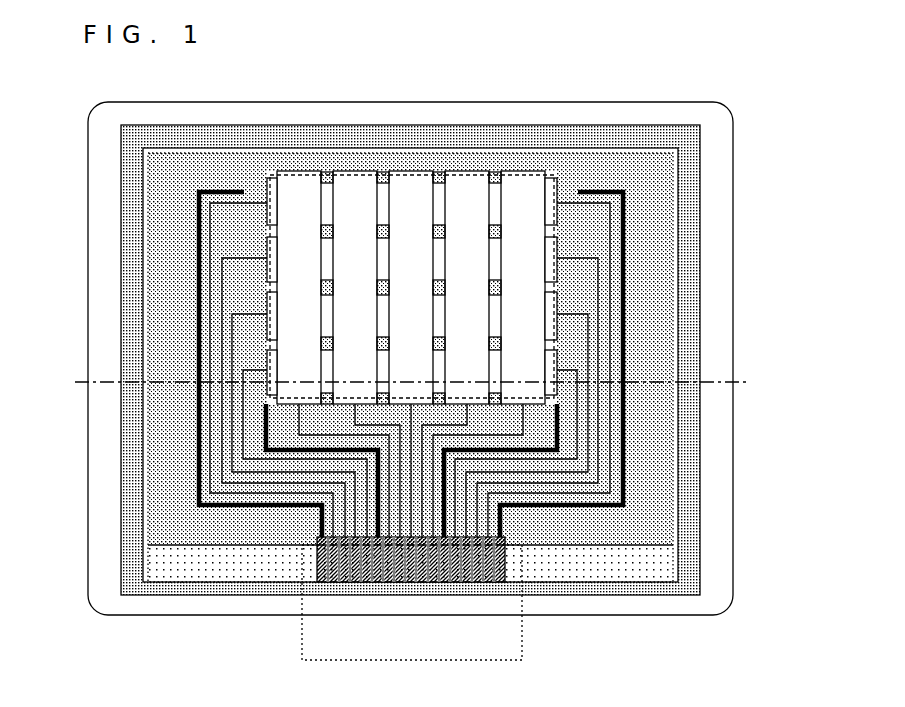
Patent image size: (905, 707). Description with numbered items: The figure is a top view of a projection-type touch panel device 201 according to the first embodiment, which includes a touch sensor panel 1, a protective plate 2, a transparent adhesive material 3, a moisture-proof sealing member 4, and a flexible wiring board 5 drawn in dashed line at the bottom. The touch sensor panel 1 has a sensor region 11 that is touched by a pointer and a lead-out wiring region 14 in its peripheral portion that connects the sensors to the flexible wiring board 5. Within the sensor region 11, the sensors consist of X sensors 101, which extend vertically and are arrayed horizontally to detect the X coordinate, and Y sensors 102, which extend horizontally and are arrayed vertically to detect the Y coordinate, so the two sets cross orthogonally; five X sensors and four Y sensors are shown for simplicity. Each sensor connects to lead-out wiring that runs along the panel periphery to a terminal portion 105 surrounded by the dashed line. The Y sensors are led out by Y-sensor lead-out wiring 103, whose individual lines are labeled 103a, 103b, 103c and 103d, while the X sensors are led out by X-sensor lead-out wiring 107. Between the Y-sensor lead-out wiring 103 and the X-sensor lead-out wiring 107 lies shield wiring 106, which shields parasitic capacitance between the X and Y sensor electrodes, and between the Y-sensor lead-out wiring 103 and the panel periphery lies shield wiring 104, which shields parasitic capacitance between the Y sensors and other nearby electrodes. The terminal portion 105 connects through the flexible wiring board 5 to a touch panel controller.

The projection-type touch panel device 201 is at (88, 89).
The touch sensor panel 1 is at (678, 290).
The protective plate 2 is at (733, 190).
The transparent adhesive material 3 is at (665, 352).
The moisture-proof sealing member 4 is at (700, 245).
The flexible wiring board 5 is at (522, 655).
The sensor region 11 is at (270, 173).
The lead-out wiring region 14 is at (235, 300).
The X sensors 101 is at (360, 172).
The Y sensors 102 is at (270, 355).
The Y-sensor lead-out wiring 103 is at (197, 462).
The first wiring line 103a is at (612, 373).
The second wiring line 103b is at (602, 392).
The third wiring line 103c is at (593, 418).
The fourth wiring line 103d is at (580, 445).
The shield wiring 104 is at (197, 225).
The terminal portion 105 is at (510, 557).
The shield wiring 106 is at (300, 452).
The X-sensor lead-out wiring 107 is at (378, 473).